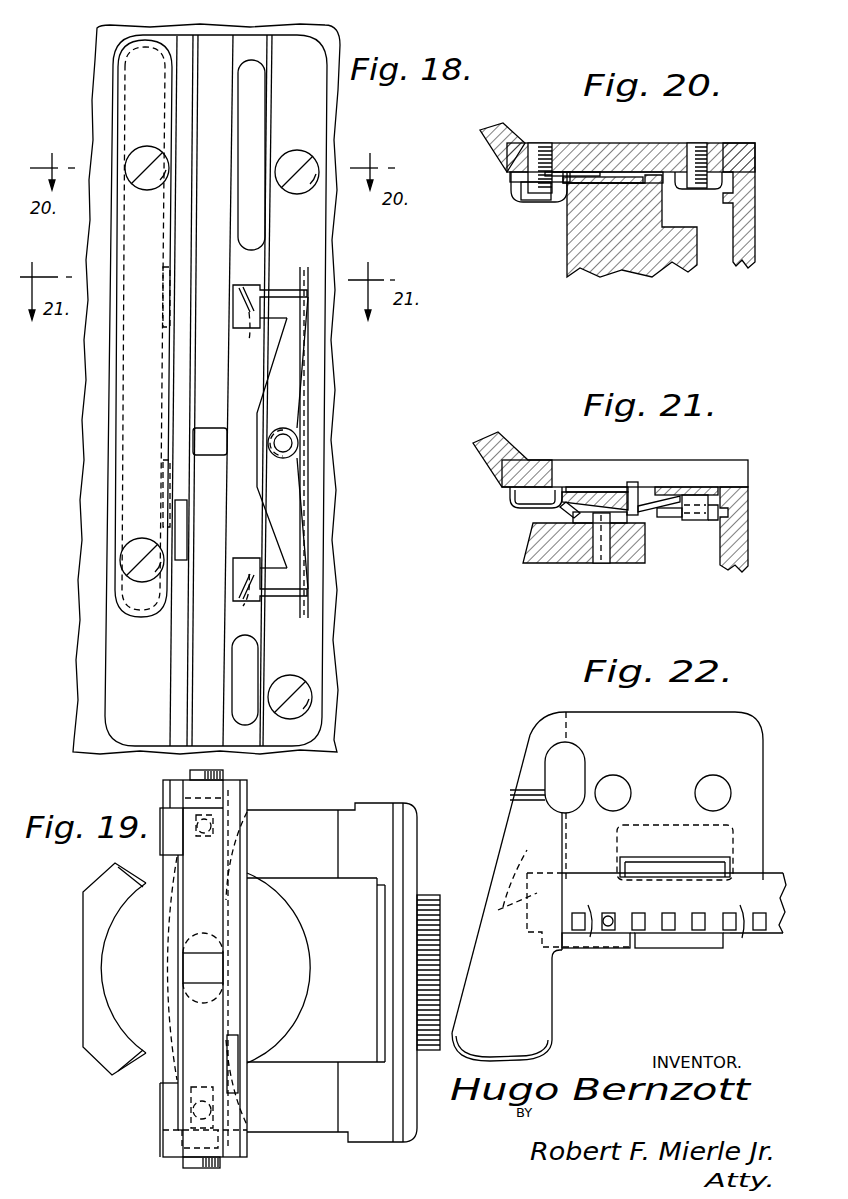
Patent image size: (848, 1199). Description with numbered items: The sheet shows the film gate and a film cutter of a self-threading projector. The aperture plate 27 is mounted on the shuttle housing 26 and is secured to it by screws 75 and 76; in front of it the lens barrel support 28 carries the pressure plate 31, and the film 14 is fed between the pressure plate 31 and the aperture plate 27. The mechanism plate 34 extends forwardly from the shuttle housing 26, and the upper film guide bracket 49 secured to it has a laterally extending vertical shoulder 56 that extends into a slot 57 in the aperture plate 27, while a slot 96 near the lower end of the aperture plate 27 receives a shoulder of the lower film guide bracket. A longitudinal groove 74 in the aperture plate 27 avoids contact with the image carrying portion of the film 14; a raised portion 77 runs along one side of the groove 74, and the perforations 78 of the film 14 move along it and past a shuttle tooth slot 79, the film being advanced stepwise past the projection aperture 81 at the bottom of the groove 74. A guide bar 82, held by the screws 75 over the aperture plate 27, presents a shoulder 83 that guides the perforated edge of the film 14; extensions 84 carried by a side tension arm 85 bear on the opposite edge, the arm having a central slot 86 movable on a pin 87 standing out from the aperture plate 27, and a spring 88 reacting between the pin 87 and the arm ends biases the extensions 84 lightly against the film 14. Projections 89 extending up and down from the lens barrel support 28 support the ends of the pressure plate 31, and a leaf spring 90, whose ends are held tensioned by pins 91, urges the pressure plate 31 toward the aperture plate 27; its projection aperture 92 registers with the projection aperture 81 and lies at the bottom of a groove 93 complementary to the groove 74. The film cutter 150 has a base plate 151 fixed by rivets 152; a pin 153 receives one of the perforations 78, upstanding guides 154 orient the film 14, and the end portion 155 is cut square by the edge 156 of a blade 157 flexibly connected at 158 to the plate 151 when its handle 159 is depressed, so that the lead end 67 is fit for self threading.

In FIG. 20, the film 14 is at (627, 193).
In FIG. 21, the film 14 is at (593, 487).
In FIG. 22, the film 14 is at (742, 907).
In FIG. 18, the shuttle housing 26 is at (104, 42).
In FIG. 20, the shuttle housing 26 is at (598, 152).
In FIG. 21, the shuttle housing 26 is at (722, 465).
In FIG. 18, the aperture plate 27 is at (316, 70).
In FIG. 21, the aperture plate 27 is at (688, 487).
In FIG. 19, the lens barrel support 28 is at (313, 817).
In FIG. 21, the lens barrel support 28 is at (573, 557).
In FIG. 19, the pressure plate 31 is at (248, 795).
In FIG. 21, the pressure plate 31 is at (567, 508).
In FIG. 20, the mechanism plate 34 is at (745, 230).
In FIG. 21, the mechanism plate 34 is at (748, 517).
In FIG. 20, the upper film guide bracket 49 is at (568, 248).
In FIG. 20, the vertical shoulder 56 is at (653, 172).
In FIG. 18, the slot 57 is at (254, 98).
In FIG. 20, the slot 57 is at (664, 170).
In FIG. 22, the lead end 67 is at (588, 908).
In FIG. 18, the longitudinal groove 74 is at (213, 63).
In FIG. 20, the longitudinal groove 74 is at (608, 178).
In FIG. 21, the longitudinal groove 74 is at (613, 492).
In FIG. 18, the screws 75 is at (150, 180).
In FIG. 20, the screws 75 is at (537, 143).
In FIG. 18, the screws 76 is at (287, 158).
In FIG. 18, the raised portion 77 is at (187, 47).
In FIG. 20, the raised portion 77 is at (578, 172).
In FIG. 22, the perforations 78 is at (670, 930).
In FIG. 18, the shuttle tooth slot 79 is at (184, 513).
In FIG. 18, the projection aperture 81 is at (207, 440).
In FIG. 18, the guide bar 82 is at (140, 64).
In FIG. 20, the guide bar 82 is at (512, 188).
In FIG. 21, the guide bar 82 is at (510, 508).
In FIG. 18, the shoulder 83 is at (178, 140).
In FIG. 20, the shoulder 83 is at (568, 185).
In FIG. 18, the extensions 84 is at (236, 613).
In FIG. 21, the extensions 84 is at (638, 488).
In FIG. 18, the side tension arm 85 is at (305, 403).
In FIG. 21, the side tension arm 85 is at (717, 521).
In FIG. 18, the central slot 86 is at (297, 437).
In FIG. 18, the pin 87 is at (284, 445).
In FIG. 21, the pin 87 is at (668, 518).
In FIG. 18, the spring 88 is at (298, 498).
In FIG. 21, the spring 88 is at (660, 514).
In FIG. 19, the projections 89 is at (225, 772).
In FIG. 19, the leaf spring 90 is at (225, 857).
In FIG. 21, the leaf spring 90 is at (577, 515).
In FIG. 19, the pins 91 is at (215, 824).
In FIG. 21, the pins 91 is at (603, 557).
In FIG. 19, the projection aperture 92 is at (210, 968).
In FIG. 19, the groove 93 is at (197, 895).
In FIG. 18, the slot 96 is at (247, 654).
In FIG. 22, the film cutter 150 is at (537, 705).
In FIG. 22, the base plate 151 is at (730, 722).
In FIG. 22, the rivets 152 is at (710, 785).
In FIG. 22, the pin 153 is at (608, 930).
In FIG. 22, the upstanding guides 154 is at (685, 867).
In FIG. 22, the end portion 155 is at (555, 898).
In FIG. 22, the edge 156 is at (565, 842).
In FIG. 22, the blade 157 is at (510, 836).
In FIG. 22, the flexible connection 158 is at (532, 735).
In FIG. 22, the handle 159 is at (542, 1020).